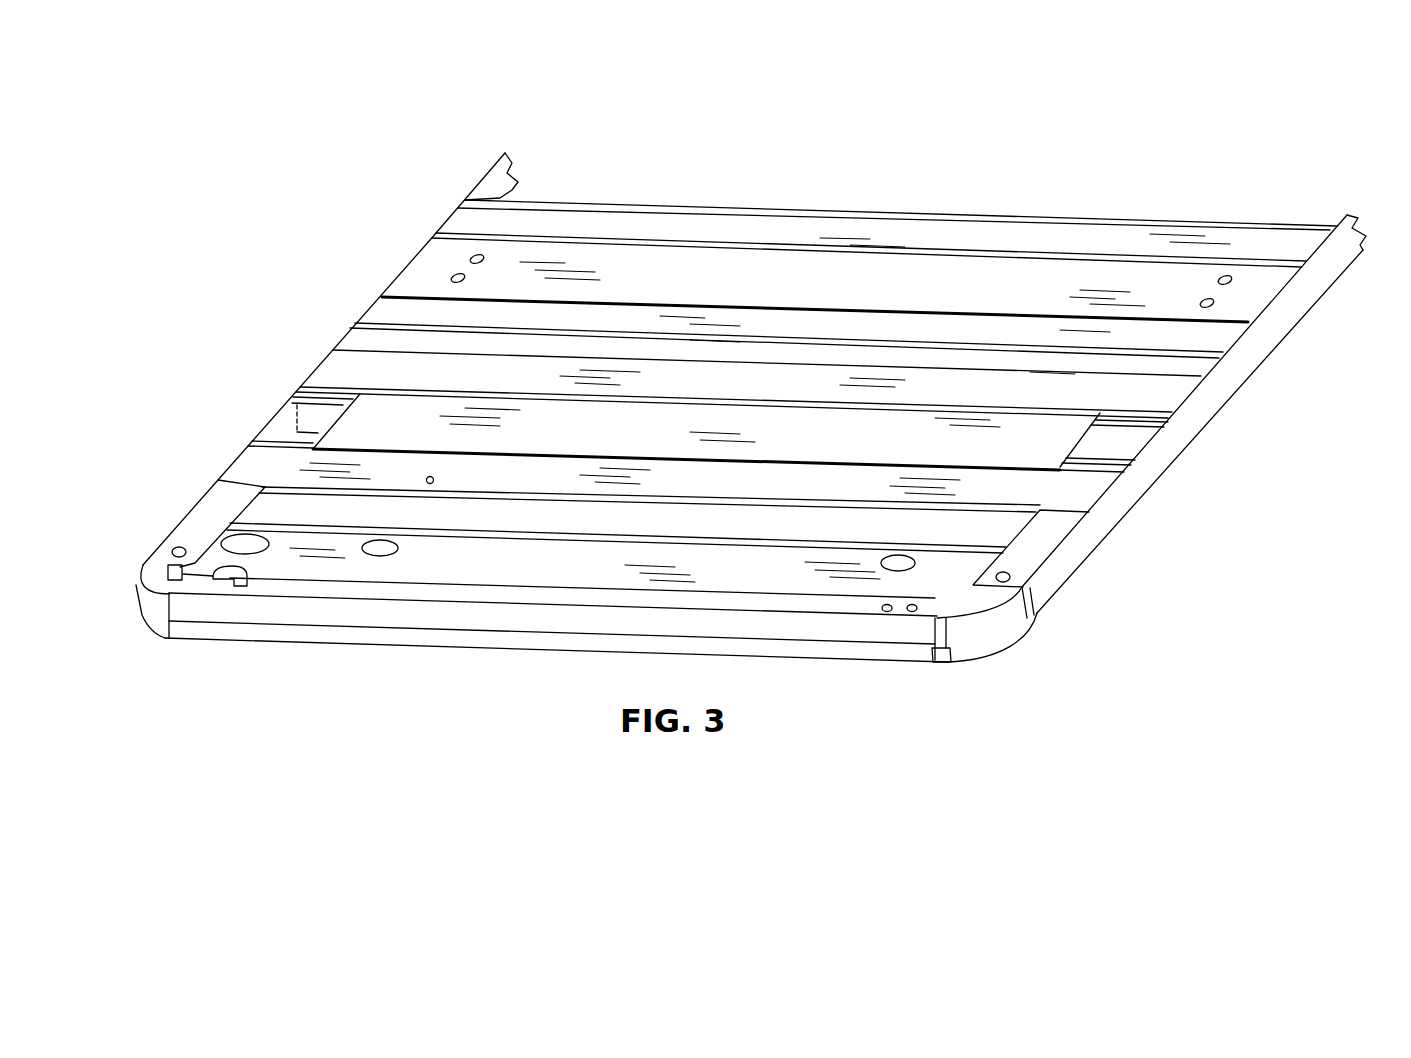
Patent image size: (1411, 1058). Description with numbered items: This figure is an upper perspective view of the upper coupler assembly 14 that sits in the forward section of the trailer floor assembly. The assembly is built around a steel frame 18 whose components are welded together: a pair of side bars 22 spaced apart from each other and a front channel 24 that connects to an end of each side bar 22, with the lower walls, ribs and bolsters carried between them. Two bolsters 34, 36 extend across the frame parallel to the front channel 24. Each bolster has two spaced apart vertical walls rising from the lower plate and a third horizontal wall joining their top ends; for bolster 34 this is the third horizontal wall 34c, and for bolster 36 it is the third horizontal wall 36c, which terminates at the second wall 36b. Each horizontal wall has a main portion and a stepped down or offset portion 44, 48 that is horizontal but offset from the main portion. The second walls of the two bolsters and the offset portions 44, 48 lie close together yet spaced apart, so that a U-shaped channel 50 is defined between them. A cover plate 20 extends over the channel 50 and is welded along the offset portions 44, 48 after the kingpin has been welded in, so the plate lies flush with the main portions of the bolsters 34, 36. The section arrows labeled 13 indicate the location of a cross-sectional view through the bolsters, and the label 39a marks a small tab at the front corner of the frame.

The upper coupler assembly 14 is at (1030, 191).
The section line arrows 13 is at (807, 320).
The frame 18 is at (1162, 457).
The cover plate 20 is at (377, 407).
The side bar 22 is at (277, 427).
The front channel 24 is at (485, 620).
The bolster 34 is at (429, 486).
The third horizontal wall 34c is at (842, 490).
The bolster 36 is at (437, 360).
The second wall 36b is at (307, 407).
The third horizontal wall 36c is at (1033, 387).
The tab 39a is at (952, 533).
The stepped down or offset portion 44 is at (274, 443).
The stepped down or offset portion 48 is at (298, 425).
The U-shaped channel 50 is at (1122, 438).